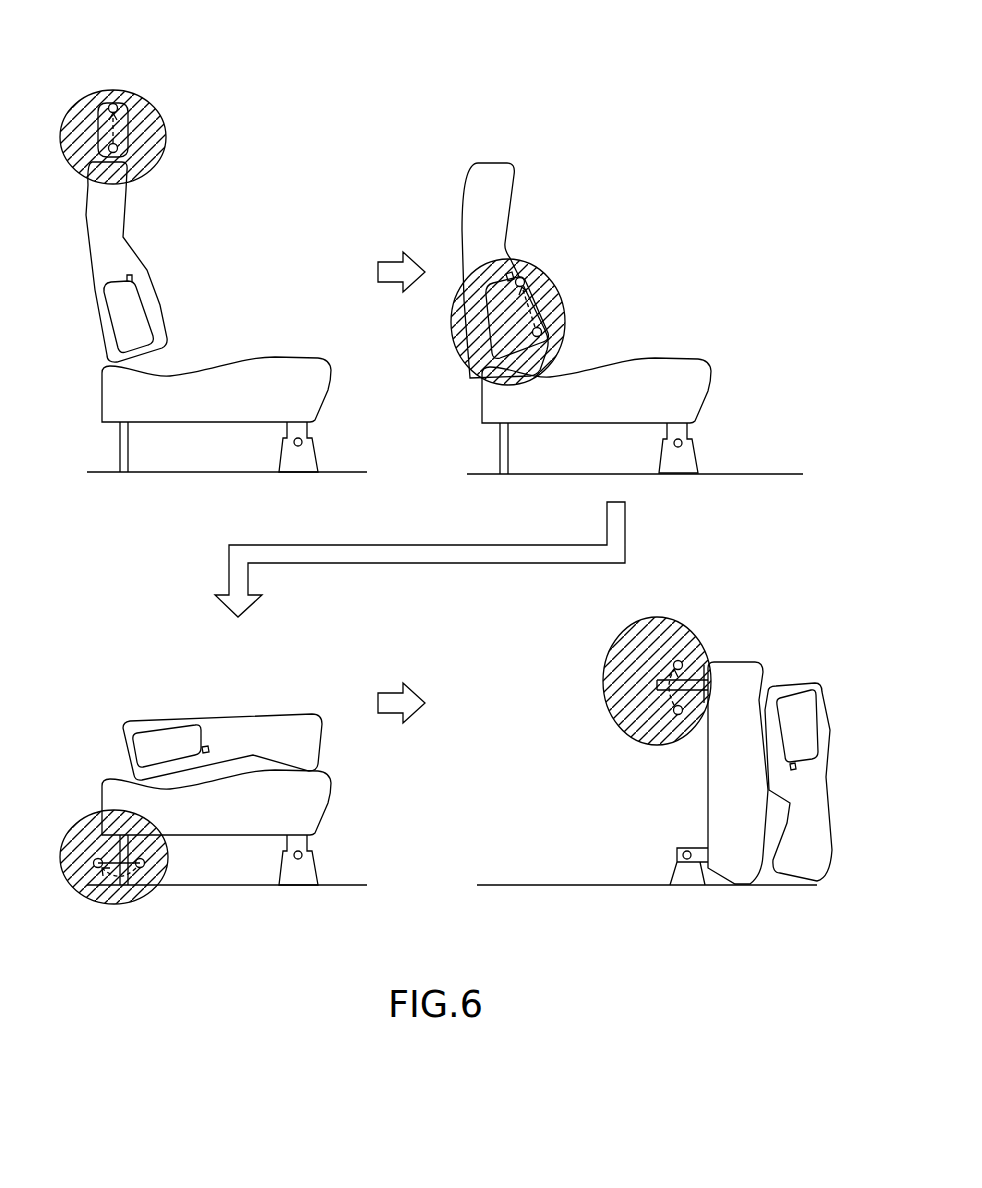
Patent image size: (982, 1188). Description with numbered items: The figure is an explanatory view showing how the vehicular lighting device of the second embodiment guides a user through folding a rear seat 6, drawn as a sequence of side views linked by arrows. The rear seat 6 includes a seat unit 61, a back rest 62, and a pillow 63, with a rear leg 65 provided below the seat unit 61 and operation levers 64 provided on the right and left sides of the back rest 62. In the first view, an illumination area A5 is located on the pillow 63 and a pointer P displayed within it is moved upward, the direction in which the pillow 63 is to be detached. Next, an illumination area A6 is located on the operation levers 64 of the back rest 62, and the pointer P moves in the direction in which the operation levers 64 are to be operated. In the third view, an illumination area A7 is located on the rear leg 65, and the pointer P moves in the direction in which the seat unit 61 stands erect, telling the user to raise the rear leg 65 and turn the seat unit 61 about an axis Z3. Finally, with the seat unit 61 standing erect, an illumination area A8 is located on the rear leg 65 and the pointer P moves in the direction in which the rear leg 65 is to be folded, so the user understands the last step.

The rear seat 6 is at (258, 239).
The seat unit 61 is at (278, 357).
The back rest 62 is at (153, 294).
The pillow 63 is at (112, 92).
The operation levers 64 is at (132, 277).
The rear leg 65 is at (121, 450).
The axis Z3 is at (307, 440).
The pointer P is at (118, 109).
The illumination area A5 is at (150, 105).
The illumination area A6 is at (567, 303).
The illumination area A7 is at (70, 815).
The illumination area A8 is at (607, 648).